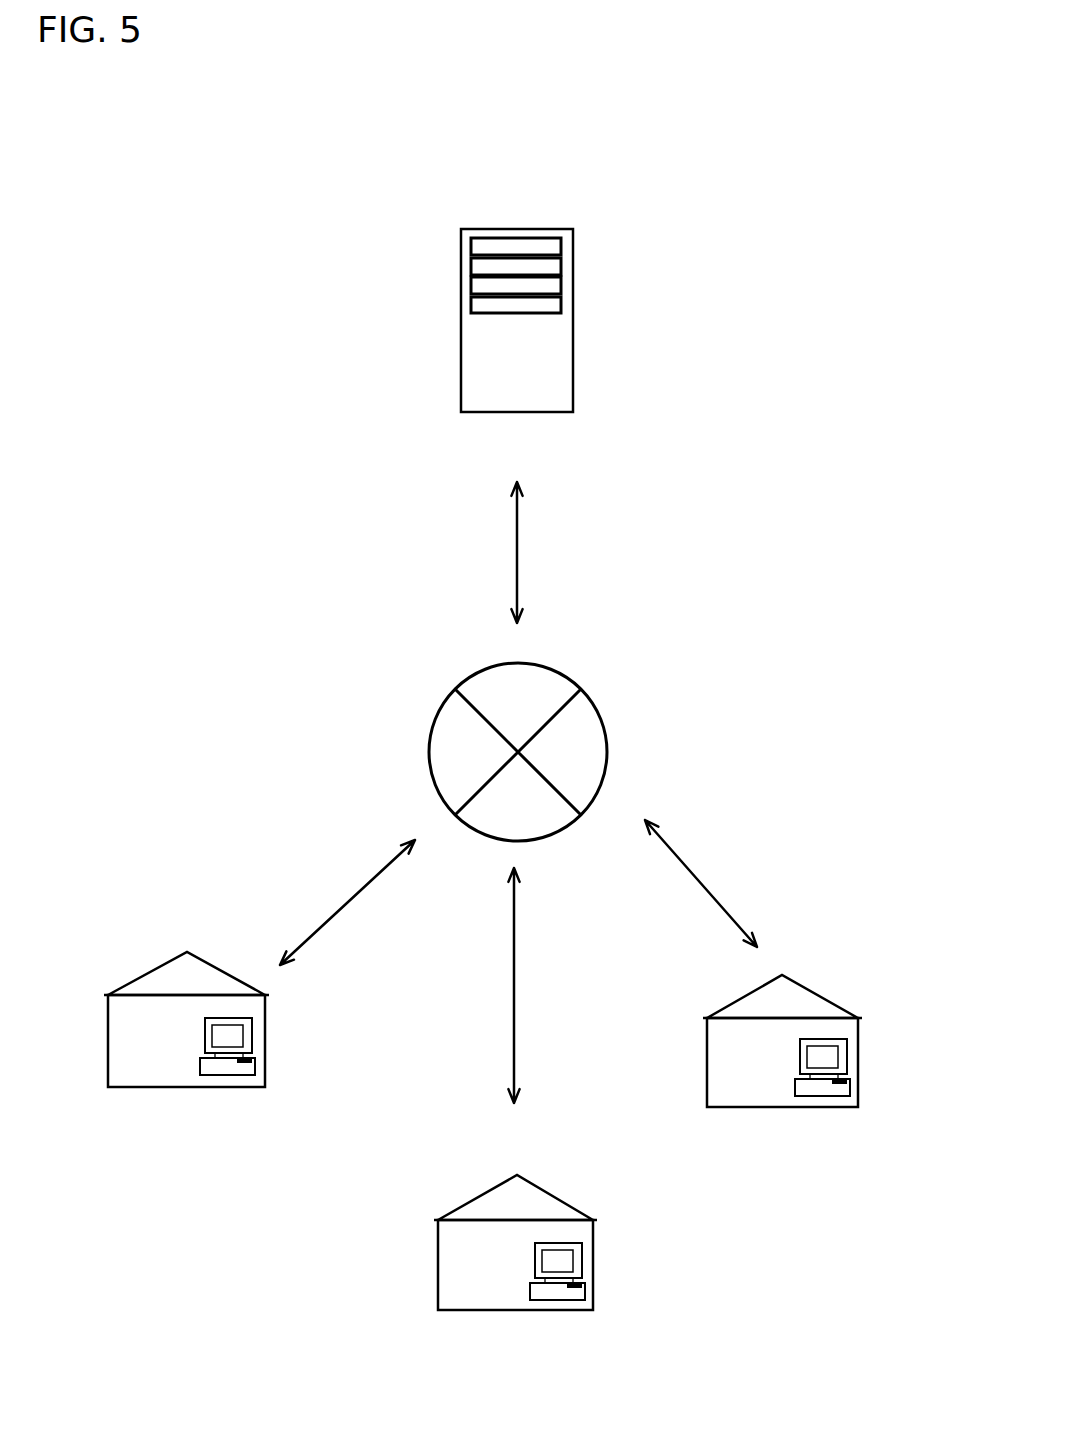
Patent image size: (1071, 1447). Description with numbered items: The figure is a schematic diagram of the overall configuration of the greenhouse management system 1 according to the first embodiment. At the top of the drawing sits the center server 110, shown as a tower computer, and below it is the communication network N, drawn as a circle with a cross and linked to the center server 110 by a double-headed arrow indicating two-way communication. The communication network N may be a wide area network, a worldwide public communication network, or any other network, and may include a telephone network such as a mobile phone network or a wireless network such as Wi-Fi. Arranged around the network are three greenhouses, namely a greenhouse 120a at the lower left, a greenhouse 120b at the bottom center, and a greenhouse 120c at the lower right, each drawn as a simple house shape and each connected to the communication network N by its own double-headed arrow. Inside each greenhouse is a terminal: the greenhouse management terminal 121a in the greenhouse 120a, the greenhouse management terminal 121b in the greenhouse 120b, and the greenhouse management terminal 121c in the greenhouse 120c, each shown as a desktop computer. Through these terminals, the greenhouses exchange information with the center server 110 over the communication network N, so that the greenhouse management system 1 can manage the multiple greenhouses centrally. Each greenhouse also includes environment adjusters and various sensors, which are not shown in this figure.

The greenhouse management system 1 is at (250, 200).
The center server 110 is at (573, 318).
The communication network N is at (605, 722).
The greenhouse 120a is at (187, 950).
The greenhouse management terminal 121a is at (252, 1058).
The greenhouse 120b is at (438, 1268).
The greenhouse management terminal 121b is at (585, 1287).
The greenhouse 120c is at (822, 995).
The greenhouse management terminal 121c is at (848, 1100).